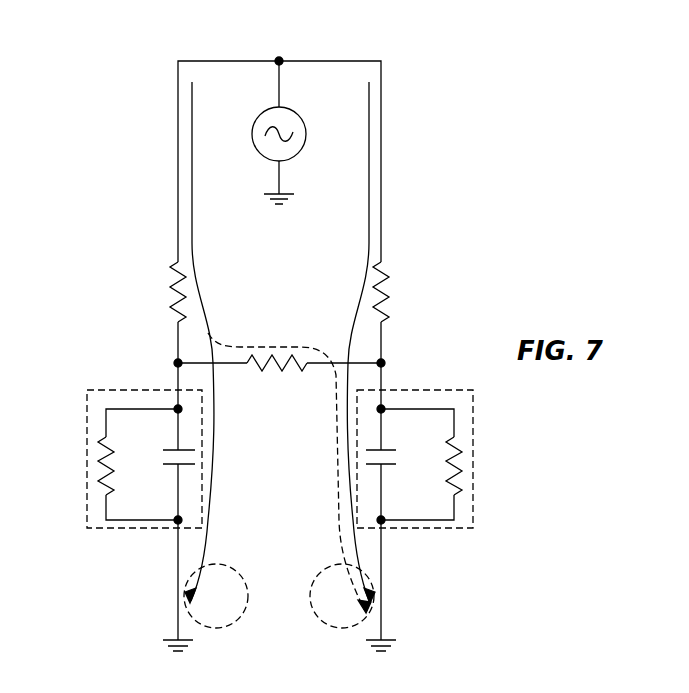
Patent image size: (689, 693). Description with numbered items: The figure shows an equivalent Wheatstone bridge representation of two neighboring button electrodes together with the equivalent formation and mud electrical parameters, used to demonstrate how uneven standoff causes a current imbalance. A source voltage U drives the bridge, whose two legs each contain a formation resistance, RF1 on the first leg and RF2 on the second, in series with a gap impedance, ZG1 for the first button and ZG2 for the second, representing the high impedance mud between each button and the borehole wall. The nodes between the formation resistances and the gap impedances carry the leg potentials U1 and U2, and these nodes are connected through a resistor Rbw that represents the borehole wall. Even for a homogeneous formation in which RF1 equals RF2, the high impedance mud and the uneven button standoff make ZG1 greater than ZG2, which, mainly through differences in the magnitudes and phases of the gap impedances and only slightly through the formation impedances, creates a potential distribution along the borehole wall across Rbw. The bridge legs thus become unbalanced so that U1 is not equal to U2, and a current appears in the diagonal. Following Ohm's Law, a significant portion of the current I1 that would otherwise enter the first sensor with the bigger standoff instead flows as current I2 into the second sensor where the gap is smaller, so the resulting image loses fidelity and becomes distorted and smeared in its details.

The source voltage U is at (286, 130).
The first formation resistance RF1 is at (153, 292).
The second formation resistance RF2 is at (401, 292).
The first leg potential U1 is at (162, 363).
The second leg potential U2 is at (397, 364).
The borehole wall resistor Rbw is at (277, 384).
The first gap impedance ZG1 is at (121, 459).
The second gap impedance ZG2 is at (437, 459).
The first sensor current I1 is at (186, 607).
The second sensor current I2 is at (378, 607).